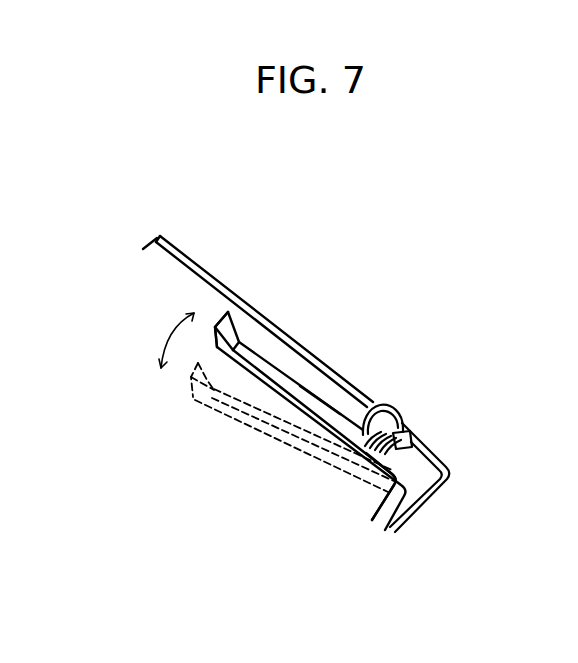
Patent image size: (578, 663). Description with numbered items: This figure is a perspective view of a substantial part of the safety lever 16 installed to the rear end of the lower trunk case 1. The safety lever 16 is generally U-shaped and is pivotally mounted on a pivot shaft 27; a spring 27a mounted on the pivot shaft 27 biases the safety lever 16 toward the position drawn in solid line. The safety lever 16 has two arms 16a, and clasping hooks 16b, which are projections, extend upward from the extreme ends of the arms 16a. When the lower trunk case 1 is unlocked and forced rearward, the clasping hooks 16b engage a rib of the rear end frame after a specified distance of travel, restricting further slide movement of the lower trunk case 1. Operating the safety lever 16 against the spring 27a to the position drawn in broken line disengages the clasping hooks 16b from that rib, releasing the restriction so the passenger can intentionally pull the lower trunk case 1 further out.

The lower trunk case 1 is at (203, 273).
The safety lever 16 is at (340, 415).
The arms 16a is at (298, 386).
The clasping hooks 16b is at (232, 318).
The pivot shaft 27 is at (372, 470).
The spring 27a is at (403, 432).